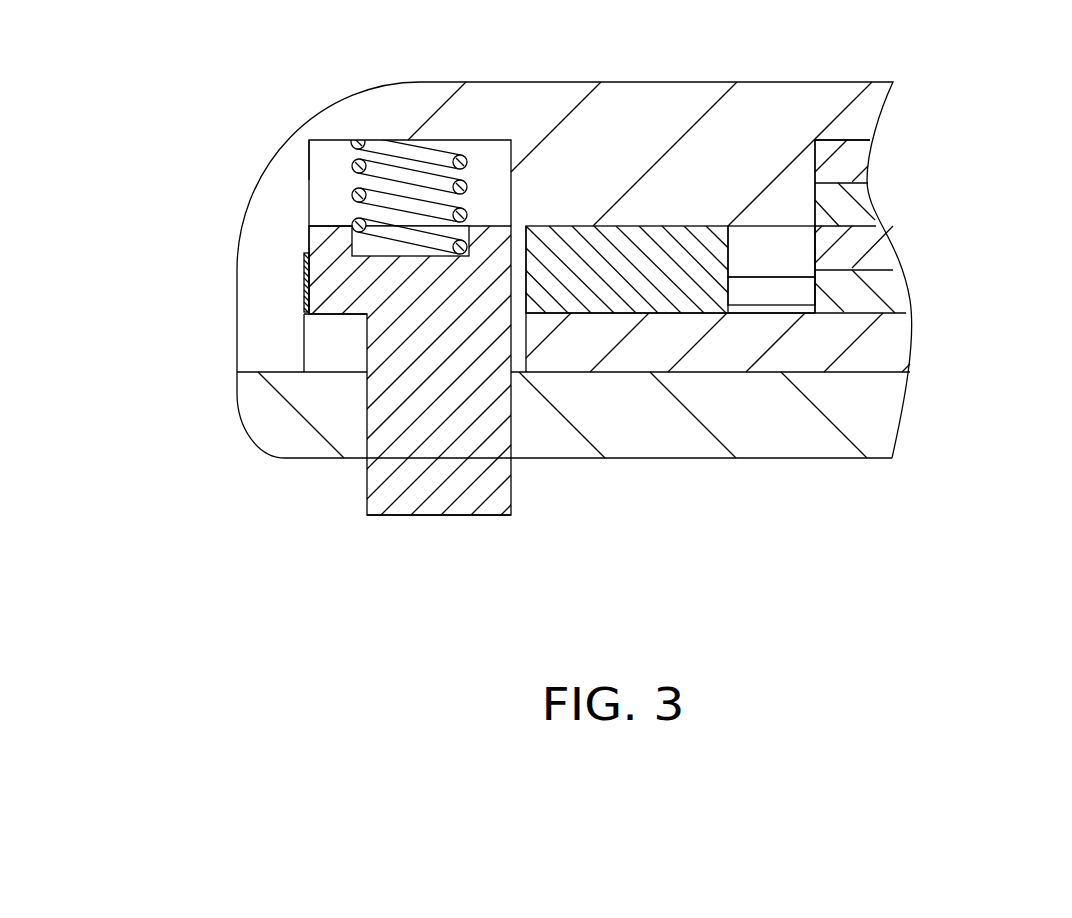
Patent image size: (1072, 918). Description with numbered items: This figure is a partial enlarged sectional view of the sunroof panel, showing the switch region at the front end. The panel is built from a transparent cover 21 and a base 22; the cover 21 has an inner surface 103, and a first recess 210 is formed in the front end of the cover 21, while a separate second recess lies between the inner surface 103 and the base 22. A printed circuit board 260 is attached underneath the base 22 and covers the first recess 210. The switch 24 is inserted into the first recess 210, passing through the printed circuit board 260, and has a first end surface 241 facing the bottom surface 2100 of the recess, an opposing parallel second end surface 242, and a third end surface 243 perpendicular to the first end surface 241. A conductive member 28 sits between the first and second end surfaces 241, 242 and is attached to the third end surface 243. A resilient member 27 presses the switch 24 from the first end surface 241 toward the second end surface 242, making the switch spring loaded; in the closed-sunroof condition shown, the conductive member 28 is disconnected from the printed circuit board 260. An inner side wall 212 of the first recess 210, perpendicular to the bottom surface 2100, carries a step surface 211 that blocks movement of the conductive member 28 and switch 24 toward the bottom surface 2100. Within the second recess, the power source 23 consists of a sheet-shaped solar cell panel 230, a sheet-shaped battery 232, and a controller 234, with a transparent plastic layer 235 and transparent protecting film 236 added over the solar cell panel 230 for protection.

The cover 21 is at (557, 115).
The base 22 is at (729, 357).
The power source 23 is at (993, 213).
The switch 24 is at (448, 498).
The resilient member 27 is at (392, 150).
The conductive member 28 is at (300, 295).
The inner surface 103 is at (855, 135).
The first recess 210 is at (330, 192).
The step surface 211 is at (303, 262).
The inner side wall 212 is at (308, 330).
The solar cell panel 230 is at (857, 244).
The battery 232 is at (883, 295).
The controller 234 is at (695, 295).
The transparent plastic layer 235 is at (852, 207).
The transparent protecting film 236 is at (853, 162).
The first end surface 241 is at (330, 222).
The second end surface 242 is at (383, 517).
The third end surface 243 is at (307, 235).
The printed circuit board 260 is at (270, 418).
The bottom surface 2100 is at (337, 138).